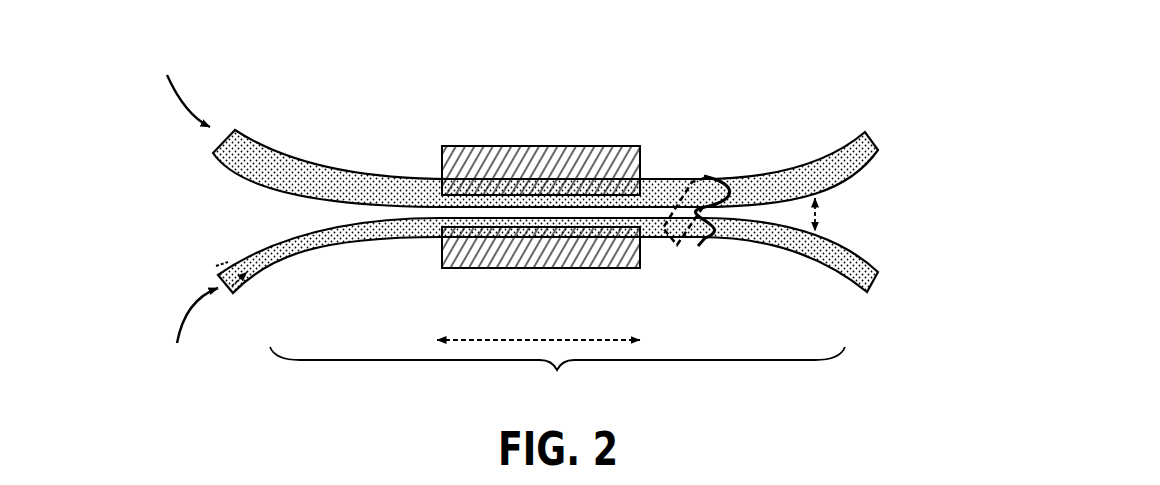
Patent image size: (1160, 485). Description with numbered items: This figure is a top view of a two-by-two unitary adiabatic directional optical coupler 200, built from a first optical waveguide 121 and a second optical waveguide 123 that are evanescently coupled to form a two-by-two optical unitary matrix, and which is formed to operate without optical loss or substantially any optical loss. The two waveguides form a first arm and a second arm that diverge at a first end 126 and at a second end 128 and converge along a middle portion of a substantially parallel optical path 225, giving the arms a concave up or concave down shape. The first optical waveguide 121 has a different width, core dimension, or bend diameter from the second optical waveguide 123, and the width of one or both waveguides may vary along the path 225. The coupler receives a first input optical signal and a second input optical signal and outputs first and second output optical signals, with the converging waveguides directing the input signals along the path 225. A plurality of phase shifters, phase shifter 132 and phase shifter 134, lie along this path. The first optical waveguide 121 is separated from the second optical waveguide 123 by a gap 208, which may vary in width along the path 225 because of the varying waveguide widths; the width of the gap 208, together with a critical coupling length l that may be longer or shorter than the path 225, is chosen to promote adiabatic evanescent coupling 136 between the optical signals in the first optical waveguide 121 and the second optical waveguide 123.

The first optical waveguide 121 is at (303, 163).
The second optical waveguide 123 is at (287, 257).
The first end 126 is at (273, 105).
The second end 128 is at (832, 150).
The phase shifter 132 is at (622, 146).
The phase shifter 134 is at (640, 257).
The evanescent coupling 136 is at (700, 178).
The adiabatic directional optical coupler 200 is at (858, 47).
The gap 208 is at (841, 214).
The optical path 225 is at (557, 357).